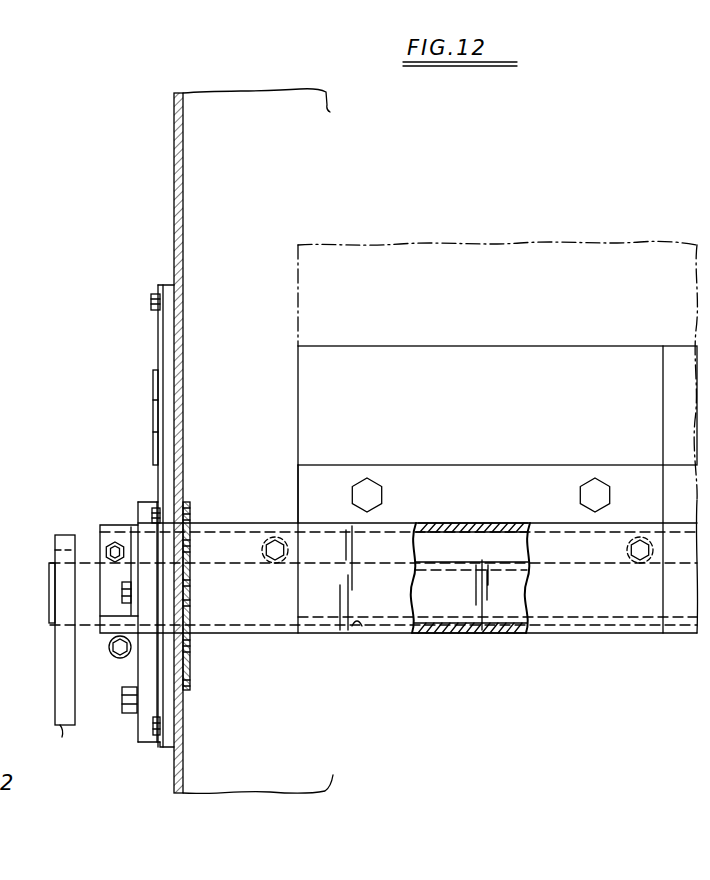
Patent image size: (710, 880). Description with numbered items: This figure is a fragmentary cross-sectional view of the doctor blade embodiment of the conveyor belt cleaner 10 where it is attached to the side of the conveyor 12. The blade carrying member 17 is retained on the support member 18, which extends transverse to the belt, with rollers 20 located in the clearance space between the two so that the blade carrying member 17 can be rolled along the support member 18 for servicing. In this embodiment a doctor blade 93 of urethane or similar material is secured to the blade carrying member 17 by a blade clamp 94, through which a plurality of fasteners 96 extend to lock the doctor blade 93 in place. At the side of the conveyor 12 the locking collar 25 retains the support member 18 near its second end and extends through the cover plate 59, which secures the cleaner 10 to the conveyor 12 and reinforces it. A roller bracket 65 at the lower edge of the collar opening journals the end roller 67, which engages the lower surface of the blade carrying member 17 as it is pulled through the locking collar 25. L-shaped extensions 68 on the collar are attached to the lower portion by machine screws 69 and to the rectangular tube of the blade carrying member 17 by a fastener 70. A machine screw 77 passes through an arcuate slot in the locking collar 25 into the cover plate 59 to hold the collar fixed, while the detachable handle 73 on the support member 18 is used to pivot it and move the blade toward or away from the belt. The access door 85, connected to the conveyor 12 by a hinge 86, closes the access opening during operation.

The conveyor belt cleaner 10 is at (126, 290).
The conveyor 12 is at (168, 153).
The blade carrying member 17 is at (266, 645).
The support member 18 is at (365, 640).
The rollers 20 is at (262, 562).
The locking collar 25 is at (152, 500).
The cover plate 59 is at (163, 750).
The roller bracket 65 is at (130, 663).
The end roller 67 is at (108, 645).
The L-shaped extensions 68 is at (113, 577).
The machine screws 69 is at (122, 597).
The fastener 70 is at (108, 552).
The detachable handle 73 is at (68, 737).
The machine screw 77 is at (118, 707).
The access door 85 is at (158, 337).
The hinge 86 is at (152, 434).
The doctor blade 93 is at (496, 352).
The blade clamp 94 is at (307, 493).
The fasteners 96 is at (378, 493).